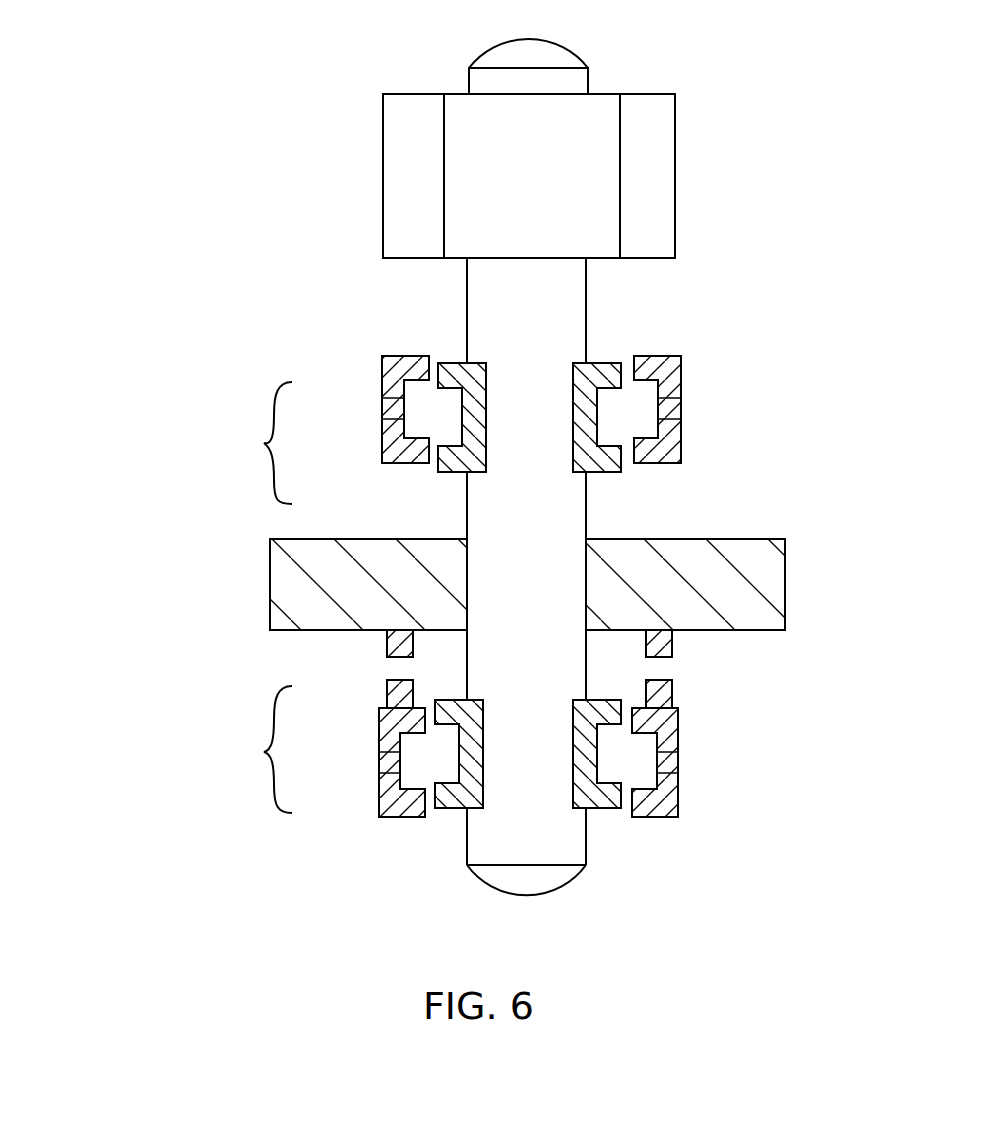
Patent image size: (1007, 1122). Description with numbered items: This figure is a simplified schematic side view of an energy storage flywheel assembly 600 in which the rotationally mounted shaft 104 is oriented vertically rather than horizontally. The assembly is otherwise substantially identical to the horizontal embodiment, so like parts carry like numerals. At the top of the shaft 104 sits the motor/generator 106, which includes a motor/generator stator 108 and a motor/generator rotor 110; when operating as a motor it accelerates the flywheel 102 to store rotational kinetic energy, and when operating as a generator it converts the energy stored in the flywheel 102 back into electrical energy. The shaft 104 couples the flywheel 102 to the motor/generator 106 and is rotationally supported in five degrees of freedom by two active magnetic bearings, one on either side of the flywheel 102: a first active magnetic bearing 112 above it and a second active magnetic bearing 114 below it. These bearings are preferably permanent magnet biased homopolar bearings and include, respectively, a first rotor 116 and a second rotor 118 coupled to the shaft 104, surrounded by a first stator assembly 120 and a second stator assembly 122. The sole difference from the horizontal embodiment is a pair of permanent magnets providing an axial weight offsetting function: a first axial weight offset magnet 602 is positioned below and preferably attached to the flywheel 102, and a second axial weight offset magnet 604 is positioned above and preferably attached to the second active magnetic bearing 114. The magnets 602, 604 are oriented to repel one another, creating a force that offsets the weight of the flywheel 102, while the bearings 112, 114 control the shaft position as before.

The energy storage flywheel assembly 600 is at (813, 88).
The flywheel 102 is at (775, 597).
The shaft 104 is at (587, 63).
The motor/generator 106 is at (697, 163).
The motor/generator stator 108 is at (432, 184).
The motor/generator rotor 110 is at (541, 184).
The first active magnetic bearing 112 is at (760, 382).
The second active magnetic bearing 114 is at (758, 688).
The first rotor 116 is at (578, 388).
The second rotor 118 is at (583, 727).
The first stator assembly 120 is at (664, 347).
The second stator assembly 122 is at (663, 830).
The first axial weight offset magnet 602 is at (668, 638).
The second axial weight offset magnet 604 is at (668, 692).